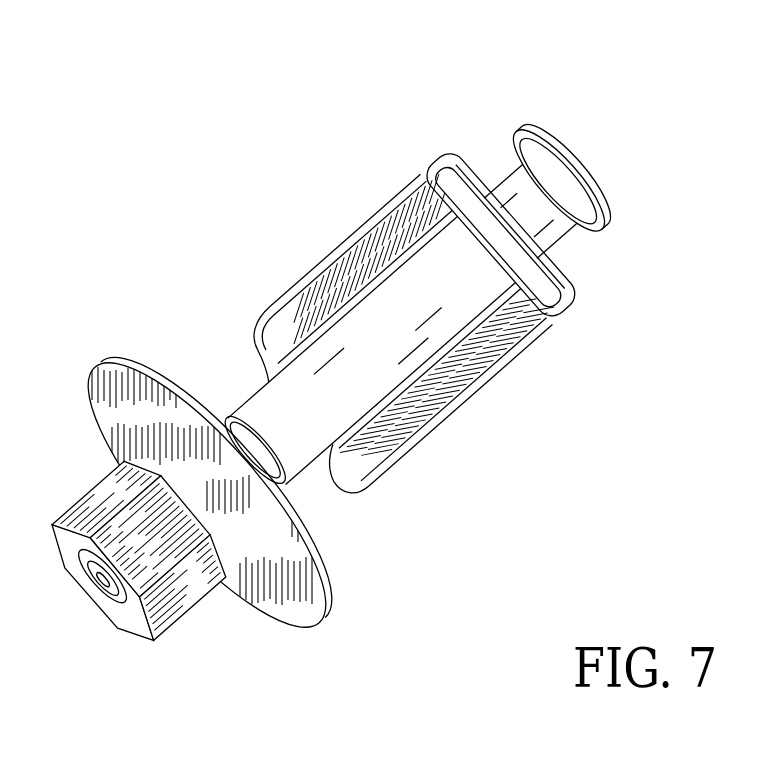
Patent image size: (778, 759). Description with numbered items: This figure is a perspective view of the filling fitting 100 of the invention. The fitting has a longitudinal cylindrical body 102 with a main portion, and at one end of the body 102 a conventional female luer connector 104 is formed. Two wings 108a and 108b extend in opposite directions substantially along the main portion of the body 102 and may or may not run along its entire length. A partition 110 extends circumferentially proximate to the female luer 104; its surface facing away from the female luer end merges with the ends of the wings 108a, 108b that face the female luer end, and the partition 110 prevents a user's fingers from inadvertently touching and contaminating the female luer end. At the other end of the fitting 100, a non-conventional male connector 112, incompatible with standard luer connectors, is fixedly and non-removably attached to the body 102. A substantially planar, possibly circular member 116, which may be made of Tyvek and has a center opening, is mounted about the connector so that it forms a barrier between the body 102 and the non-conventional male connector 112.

The filling fitting 100 is at (251, 178).
The longitudinal cylindrical body 102 is at (344, 390).
The female luer connector 104 is at (548, 142).
The wing 108a is at (373, 253).
The wing 108b is at (414, 406).
The partition 110 is at (557, 296).
The non-conventional male connector 112 is at (187, 607).
The planar member 116 is at (118, 383).